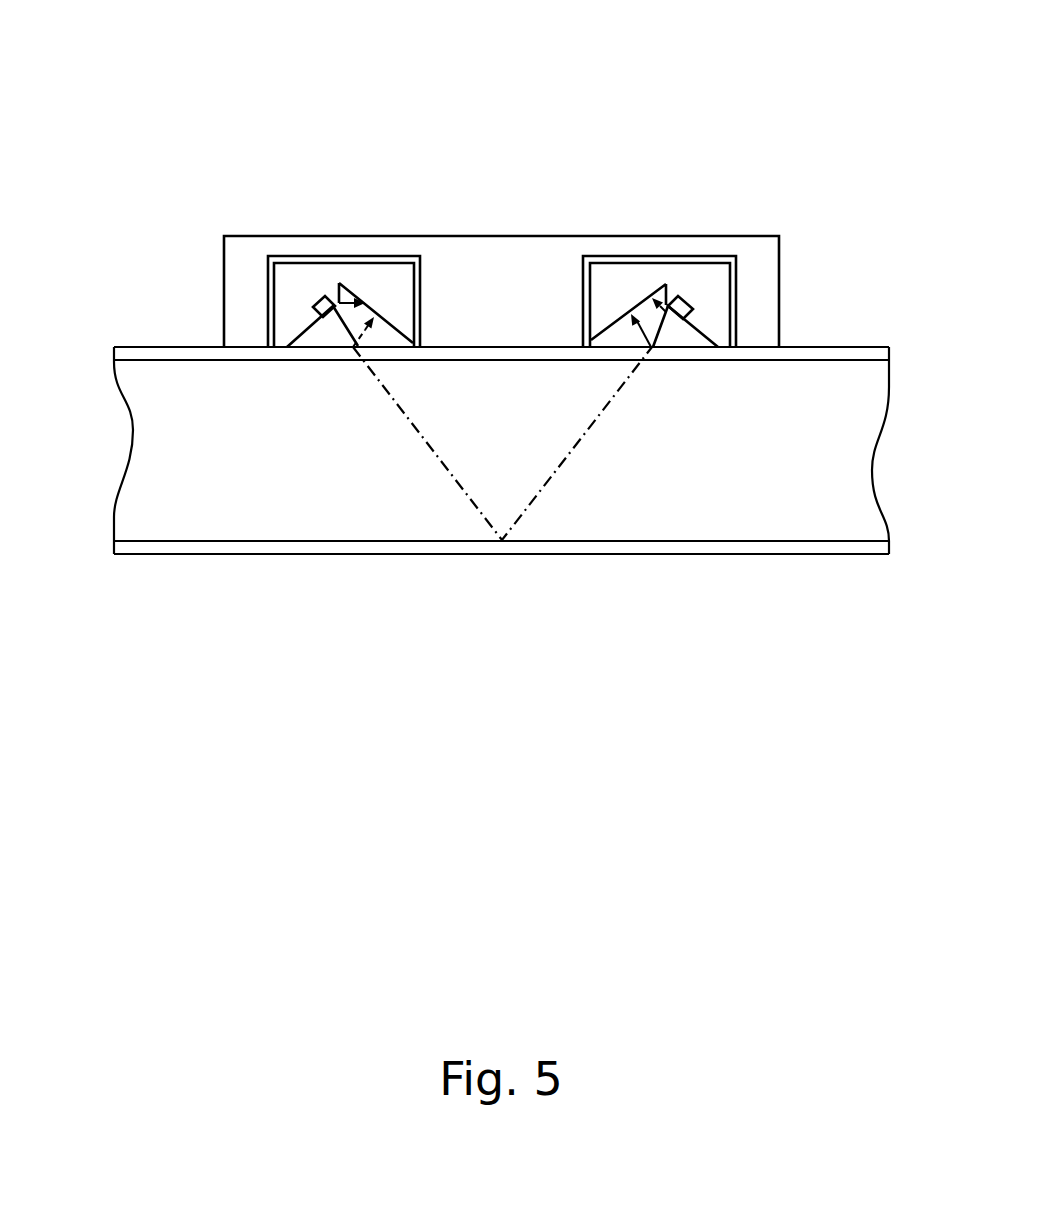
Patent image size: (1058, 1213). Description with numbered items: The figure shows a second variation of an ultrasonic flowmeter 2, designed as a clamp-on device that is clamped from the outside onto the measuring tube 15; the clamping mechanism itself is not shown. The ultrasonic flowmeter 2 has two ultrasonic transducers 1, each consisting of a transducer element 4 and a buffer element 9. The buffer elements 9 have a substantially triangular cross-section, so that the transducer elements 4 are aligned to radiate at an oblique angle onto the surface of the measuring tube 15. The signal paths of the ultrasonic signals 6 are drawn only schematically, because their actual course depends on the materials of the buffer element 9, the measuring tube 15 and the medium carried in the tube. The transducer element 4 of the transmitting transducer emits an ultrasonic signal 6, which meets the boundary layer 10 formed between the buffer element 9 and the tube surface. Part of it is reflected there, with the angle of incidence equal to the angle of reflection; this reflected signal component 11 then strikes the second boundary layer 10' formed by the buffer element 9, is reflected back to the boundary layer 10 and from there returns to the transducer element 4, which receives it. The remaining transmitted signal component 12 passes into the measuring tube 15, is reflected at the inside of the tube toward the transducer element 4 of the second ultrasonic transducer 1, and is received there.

The ultrasonic transducer 1 is at (280, 258).
The ultrasonic flowmeter 2 is at (527, 236).
The transducer element 4 is at (333, 308).
The ultrasonic signal 6 is at (343, 346).
The buffer element 9 is at (303, 336).
The boundary layer 10 is at (505, 180).
The second boundary layer 10' is at (502, 241).
The reflected signal component 11 is at (363, 322).
The transmitted signal component 12 is at (527, 512).
The measuring tube 15 is at (808, 545).